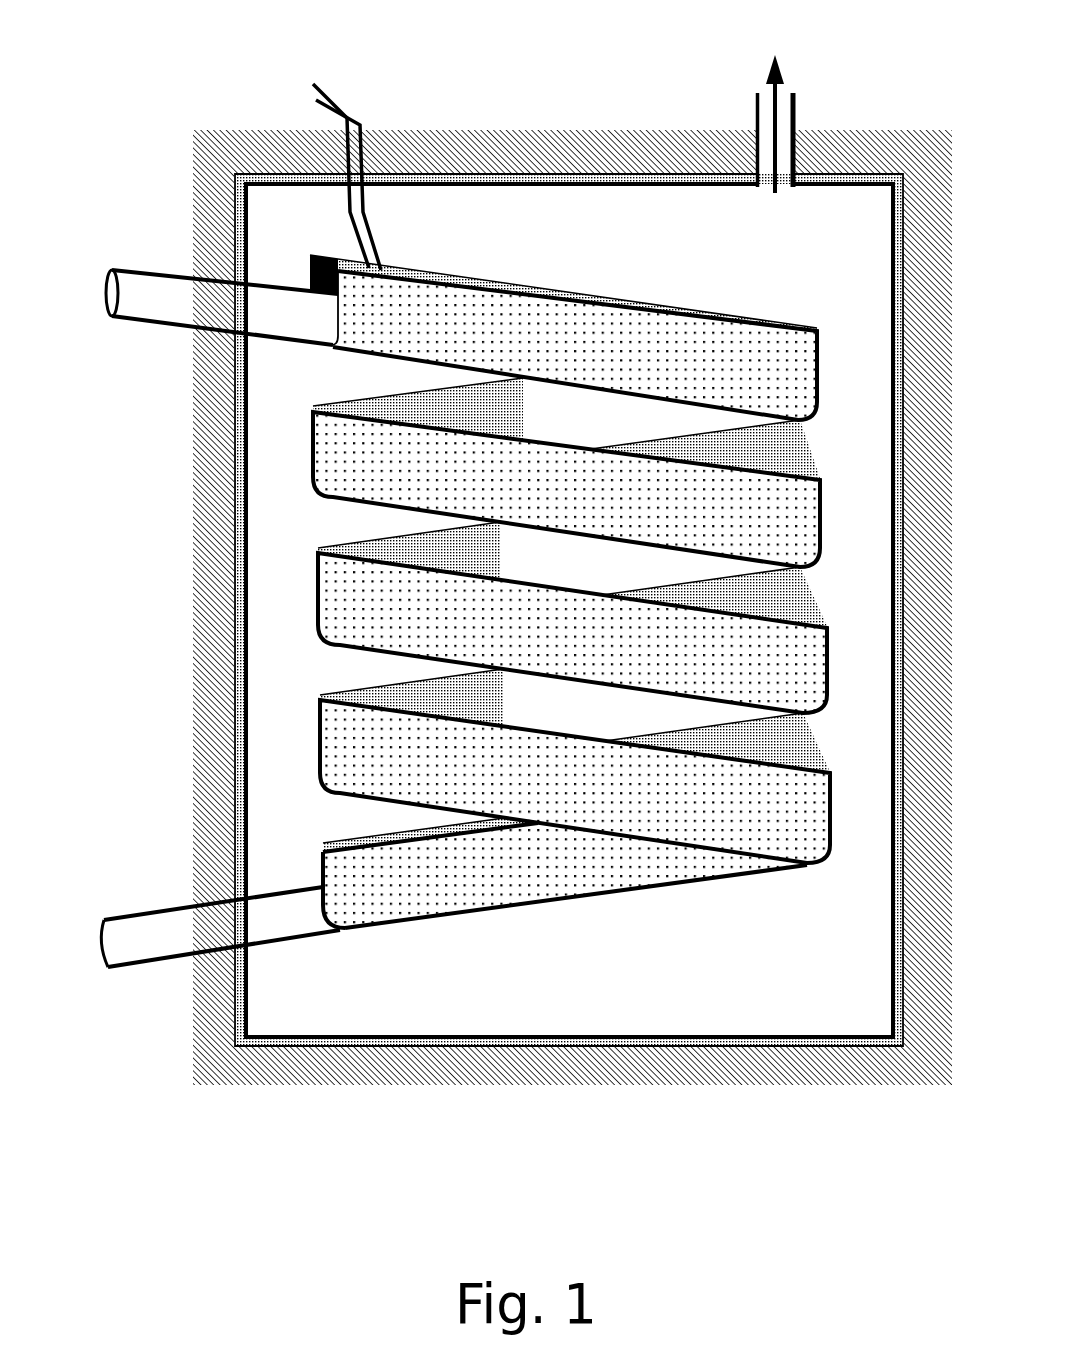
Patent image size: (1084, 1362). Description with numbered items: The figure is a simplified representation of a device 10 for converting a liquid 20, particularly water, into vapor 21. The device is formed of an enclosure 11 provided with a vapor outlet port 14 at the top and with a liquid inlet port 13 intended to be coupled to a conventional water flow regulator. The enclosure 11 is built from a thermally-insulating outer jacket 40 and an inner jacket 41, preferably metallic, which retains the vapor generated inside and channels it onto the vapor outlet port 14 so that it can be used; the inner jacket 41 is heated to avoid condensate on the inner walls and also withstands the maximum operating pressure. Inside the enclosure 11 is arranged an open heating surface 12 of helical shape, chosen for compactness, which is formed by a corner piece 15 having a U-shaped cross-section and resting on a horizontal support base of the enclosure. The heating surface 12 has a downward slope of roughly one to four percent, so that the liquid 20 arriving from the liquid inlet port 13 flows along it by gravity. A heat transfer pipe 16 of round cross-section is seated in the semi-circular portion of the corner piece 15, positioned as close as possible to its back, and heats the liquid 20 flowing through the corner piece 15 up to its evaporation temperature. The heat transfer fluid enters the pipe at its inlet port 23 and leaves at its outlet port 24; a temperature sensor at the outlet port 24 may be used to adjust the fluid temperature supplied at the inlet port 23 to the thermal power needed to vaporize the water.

The device for converting a liquid into vapor 10 is at (72, 545).
The enclosure 11 is at (495, 980).
The open heating surface 12 is at (627, 878).
The liquid inlet port 13 is at (345, 103).
The vapor outlet port 14 is at (795, 96).
The corner piece 15 is at (370, 917).
The heat transfer pipe 16 is at (187, 922).
The liquid 20 is at (288, 103).
The vapor 21 is at (772, 102).
The inlet port of heat transfer fluid 23 is at (85, 960).
The outlet port of the heat transfer fluid 24 is at (103, 285).
The thermally-insulating outer jacket 40 is at (209, 722).
The inner jacket 41 is at (247, 631).